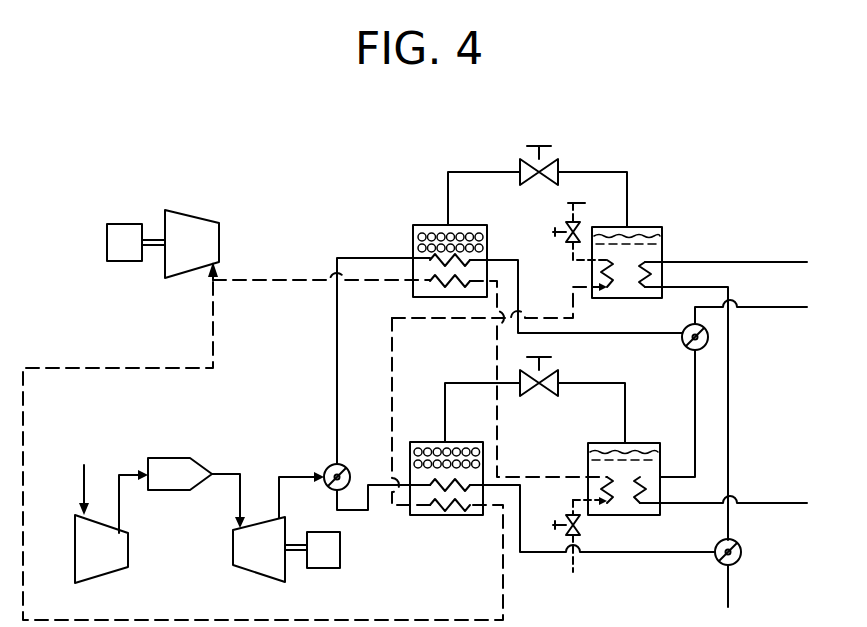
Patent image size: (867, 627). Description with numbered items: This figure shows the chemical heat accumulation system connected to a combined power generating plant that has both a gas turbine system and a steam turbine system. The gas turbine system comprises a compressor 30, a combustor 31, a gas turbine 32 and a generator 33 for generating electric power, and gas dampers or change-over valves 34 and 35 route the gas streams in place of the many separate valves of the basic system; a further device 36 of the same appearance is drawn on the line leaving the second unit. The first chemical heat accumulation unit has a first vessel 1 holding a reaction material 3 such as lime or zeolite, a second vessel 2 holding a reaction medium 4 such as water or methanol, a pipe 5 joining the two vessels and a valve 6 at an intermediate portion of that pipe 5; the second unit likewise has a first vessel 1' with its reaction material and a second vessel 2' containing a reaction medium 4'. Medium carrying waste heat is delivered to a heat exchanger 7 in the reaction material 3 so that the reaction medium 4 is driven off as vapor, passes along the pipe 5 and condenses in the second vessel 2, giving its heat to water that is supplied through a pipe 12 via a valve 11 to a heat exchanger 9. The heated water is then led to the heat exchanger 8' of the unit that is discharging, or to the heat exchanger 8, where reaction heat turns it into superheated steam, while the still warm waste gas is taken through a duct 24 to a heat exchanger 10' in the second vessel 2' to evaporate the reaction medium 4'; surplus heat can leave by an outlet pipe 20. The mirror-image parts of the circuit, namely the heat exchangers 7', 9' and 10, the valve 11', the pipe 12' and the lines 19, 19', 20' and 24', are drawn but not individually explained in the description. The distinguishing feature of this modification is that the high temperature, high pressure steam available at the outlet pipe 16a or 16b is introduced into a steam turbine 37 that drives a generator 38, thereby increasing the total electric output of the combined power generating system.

The first vessel 1 is at (434, 232).
The first vessel 1' is at (442, 449).
The second vessel 2 is at (632, 236).
The second vessel 2' is at (617, 456).
The reaction material 3 is at (464, 245).
The reaction medium 4 is at (655, 225).
The reaction medium 4' is at (628, 429).
The pipe 5 is at (480, 172).
The valve 6 is at (544, 145).
The heat exchanger 7 is at (415, 237).
The second heating coil 7' is at (423, 516).
The heat exchanger 8 is at (415, 299).
The heat exchanger 8' is at (450, 536).
The heat exchanger 9 is at (600, 300).
The second feed water inlet 9' is at (603, 514).
The cooling coil 10 is at (663, 301).
The heat exchanger 10' is at (659, 514).
The valve 11 is at (547, 222).
The second control valve 11' is at (553, 506).
The pipe 12 is at (595, 221).
The pipe 12' is at (562, 553).
The outlet pipe 16a is at (250, 280).
The outlet pipe 16b is at (213, 344).
The cooling water inlet line 19 is at (727, 240).
The second cooling water inlet line 19' is at (742, 486).
The outlet pipe 20 is at (752, 325).
The second cooling water outlet line 20' is at (696, 594).
The duct 24 is at (725, 413).
The second connecting line 24' is at (720, 413).
The compressor 30 is at (112, 560).
The combustor 31 is at (177, 458).
The gas turbine 32 is at (260, 572).
The generator 33 is at (328, 568).
The gas damper or change-over valve 34 is at (325, 466).
The gas damper or change-over valve 35 is at (708, 342).
The pump 36 is at (741, 552).
The steam turbine 37 is at (187, 210).
The generator 38 is at (115, 224).